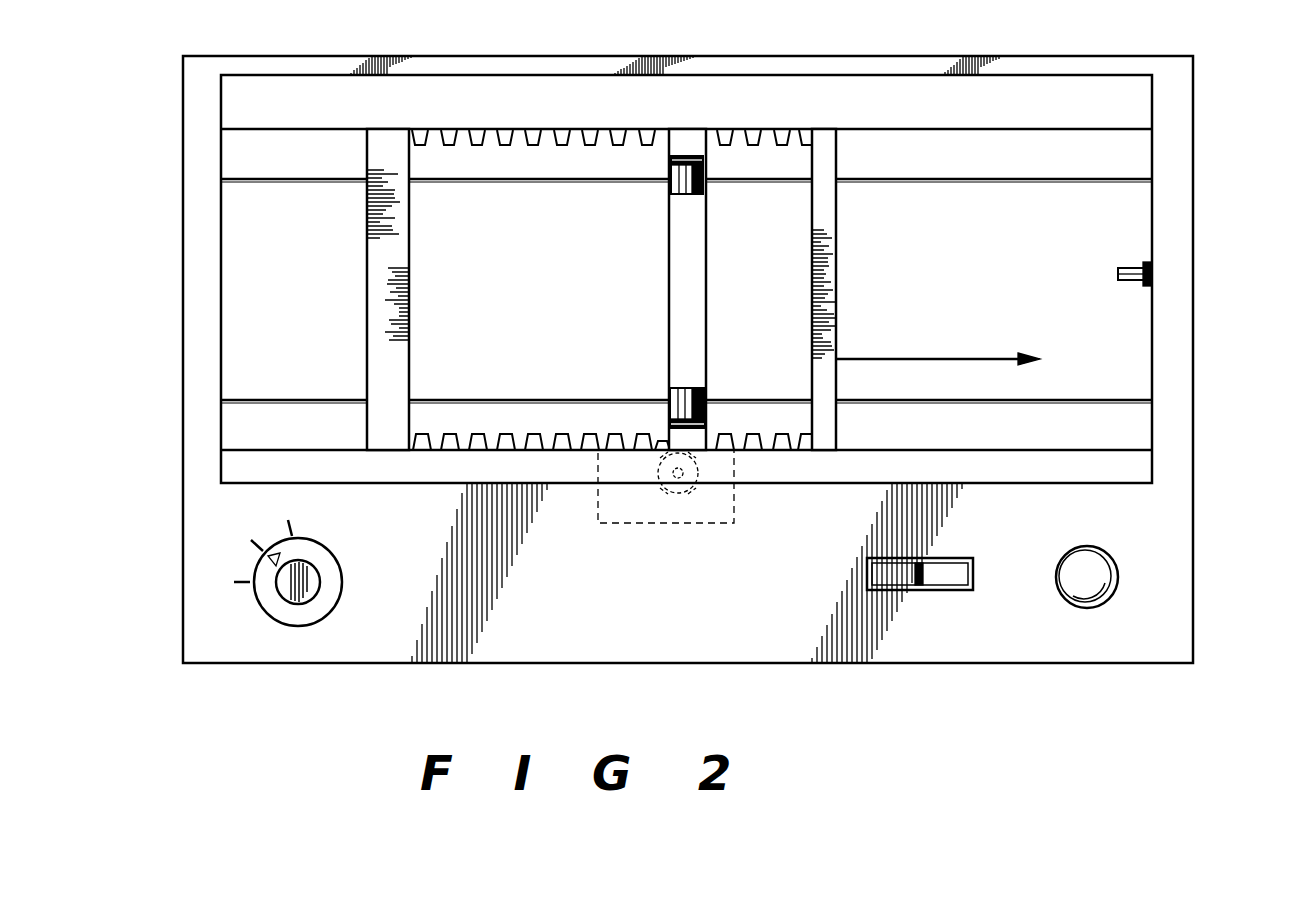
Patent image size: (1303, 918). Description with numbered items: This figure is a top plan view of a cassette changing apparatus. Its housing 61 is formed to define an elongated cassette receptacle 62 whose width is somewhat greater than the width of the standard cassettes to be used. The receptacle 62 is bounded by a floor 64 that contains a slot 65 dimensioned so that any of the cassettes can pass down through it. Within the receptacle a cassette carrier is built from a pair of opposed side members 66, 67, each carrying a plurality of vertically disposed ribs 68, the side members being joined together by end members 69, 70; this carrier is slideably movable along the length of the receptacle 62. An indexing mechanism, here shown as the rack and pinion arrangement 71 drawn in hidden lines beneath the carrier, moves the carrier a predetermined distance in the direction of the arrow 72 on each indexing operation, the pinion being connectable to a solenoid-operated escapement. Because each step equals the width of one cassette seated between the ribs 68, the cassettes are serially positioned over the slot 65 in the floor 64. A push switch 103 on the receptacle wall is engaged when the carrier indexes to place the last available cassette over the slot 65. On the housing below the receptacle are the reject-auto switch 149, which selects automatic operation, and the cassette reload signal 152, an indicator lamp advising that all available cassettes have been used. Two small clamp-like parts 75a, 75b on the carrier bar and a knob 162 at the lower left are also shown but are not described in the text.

The housing 61 is at (1185, 160).
The cassette receptacle 62 is at (1142, 224).
The floor 64 is at (1023, 252).
The slot 65 is at (680, 298).
The side member 66 is at (548, 413).
The side member 67 is at (557, 164).
The ribs 68 is at (781, 148).
The end member 69 is at (836, 156).
The end member 70 is at (377, 343).
The rack and pinion arrangement 71 is at (720, 512).
The arrow 72 is at (990, 358).
The lower clamp 75a is at (703, 383).
The upper clamp 75b is at (691, 196).
The push switch 103 is at (1128, 268).
The reject-auto switch 149 is at (932, 560).
The cassette reload signal 152 is at (1087, 558).
The control knob 162 is at (342, 580).